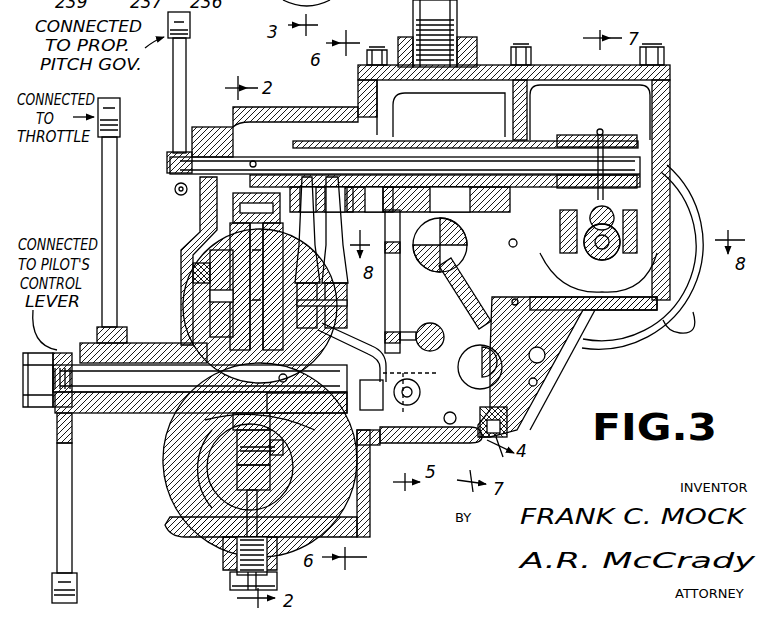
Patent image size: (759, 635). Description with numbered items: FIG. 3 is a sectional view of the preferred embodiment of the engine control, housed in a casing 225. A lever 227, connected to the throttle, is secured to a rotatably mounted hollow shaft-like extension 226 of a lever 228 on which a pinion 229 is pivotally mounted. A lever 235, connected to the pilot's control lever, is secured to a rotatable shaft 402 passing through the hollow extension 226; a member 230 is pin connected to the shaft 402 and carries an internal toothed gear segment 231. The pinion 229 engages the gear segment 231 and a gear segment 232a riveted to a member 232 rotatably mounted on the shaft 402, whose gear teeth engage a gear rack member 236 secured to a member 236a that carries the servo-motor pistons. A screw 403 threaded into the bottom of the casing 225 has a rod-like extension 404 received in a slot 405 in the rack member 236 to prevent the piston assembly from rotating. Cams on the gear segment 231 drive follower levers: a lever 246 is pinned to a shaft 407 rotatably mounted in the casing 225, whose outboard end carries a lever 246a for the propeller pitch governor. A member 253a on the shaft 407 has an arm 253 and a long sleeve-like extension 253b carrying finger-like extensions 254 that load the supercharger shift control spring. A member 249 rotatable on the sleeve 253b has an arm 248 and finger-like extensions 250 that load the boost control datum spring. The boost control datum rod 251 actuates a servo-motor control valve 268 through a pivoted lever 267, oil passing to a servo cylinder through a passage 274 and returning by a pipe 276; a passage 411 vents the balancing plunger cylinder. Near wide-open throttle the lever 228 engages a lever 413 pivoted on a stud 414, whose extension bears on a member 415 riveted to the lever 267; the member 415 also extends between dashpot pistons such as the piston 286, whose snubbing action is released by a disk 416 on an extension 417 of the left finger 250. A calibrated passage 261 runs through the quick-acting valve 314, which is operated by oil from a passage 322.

The casing 225 is at (207, 498).
The hollow shaft-like extension 226 is at (178, 426).
The lever 227 is at (108, 181).
The lever 228 is at (210, 299).
The pinion 229 is at (233, 241).
The member 230 is at (283, 412).
The internal toothed gear segment 231 is at (230, 228).
The member 232 is at (190, 445).
The gear segment 232a is at (212, 332).
The lever 235 is at (68, 558).
The gear rack member 236 is at (213, 447).
The member 236a is at (233, 484).
The lever 246 is at (252, 146).
The lever 246a is at (187, 53).
The arm 248 is at (370, 199).
The member 249 is at (421, 140).
The finger-like extensions 250 is at (453, 207).
The datum rod 251 is at (450, 236).
The arm 253 is at (320, 230).
The member 253a is at (304, 142).
The sleeve-like extension 253b is at (556, 140).
The finger-like extensions 254 is at (584, 224).
The calibrated passage 261 is at (595, 249).
The pivoted lever 267 is at (465, 346).
The servo-motor control valve 268 is at (525, 408).
The passage 274 is at (445, 445).
The pipe 276 is at (462, 9).
The dashpot piston 286 is at (403, 418).
The quick-acting valve 314 is at (546, 357).
The passage 322 is at (538, 382).
The shaft 402 is at (90, 347).
The screw 403 is at (232, 584).
The rod-like extension 404 is at (265, 538).
The slot 405 is at (250, 508).
The shaft 407 is at (206, 160).
The passage 411 is at (516, 243).
The lever 413 is at (360, 340).
The stud 414 is at (346, 292).
The member 415 is at (464, 438).
The disk 416 is at (428, 368).
The extension 417 is at (438, 262).